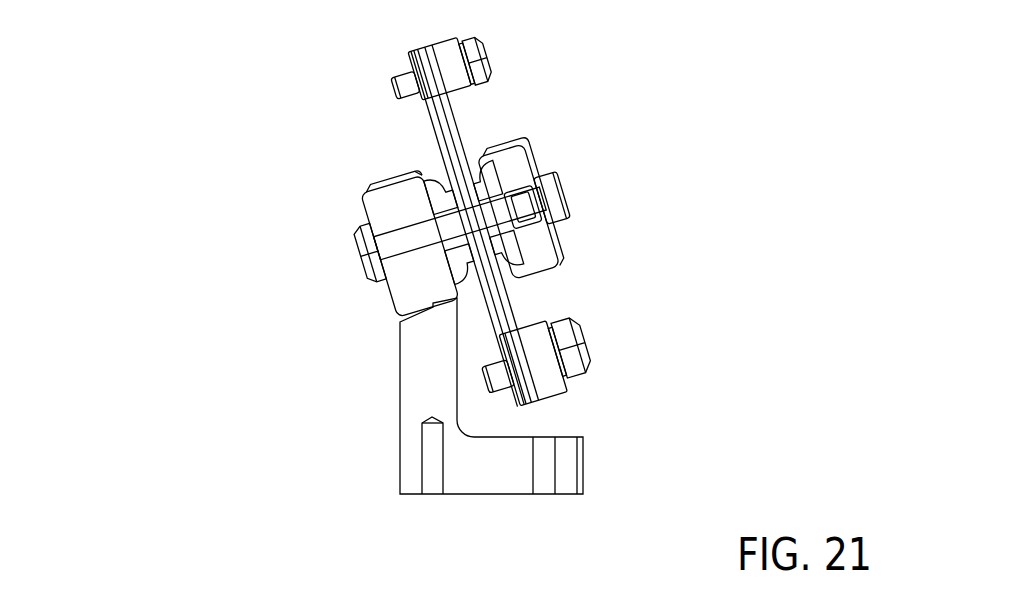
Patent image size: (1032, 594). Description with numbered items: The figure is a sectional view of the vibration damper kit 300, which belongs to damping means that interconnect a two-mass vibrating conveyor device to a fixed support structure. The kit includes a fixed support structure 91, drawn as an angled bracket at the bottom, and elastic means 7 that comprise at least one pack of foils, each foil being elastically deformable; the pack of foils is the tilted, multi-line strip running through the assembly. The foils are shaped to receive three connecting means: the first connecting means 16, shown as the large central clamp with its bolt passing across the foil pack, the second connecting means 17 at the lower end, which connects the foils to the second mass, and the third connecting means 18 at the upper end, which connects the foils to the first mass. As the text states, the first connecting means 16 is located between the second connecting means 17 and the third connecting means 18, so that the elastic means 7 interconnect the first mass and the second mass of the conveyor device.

The vibration damper kit 300 is at (146, 302).
The elastic means 7 is at (505, 294).
The third connecting means 18 is at (476, 63).
The first connecting means 16 is at (548, 193).
The second connecting means 17 is at (565, 337).
The fixed support structure 91 is at (512, 460).